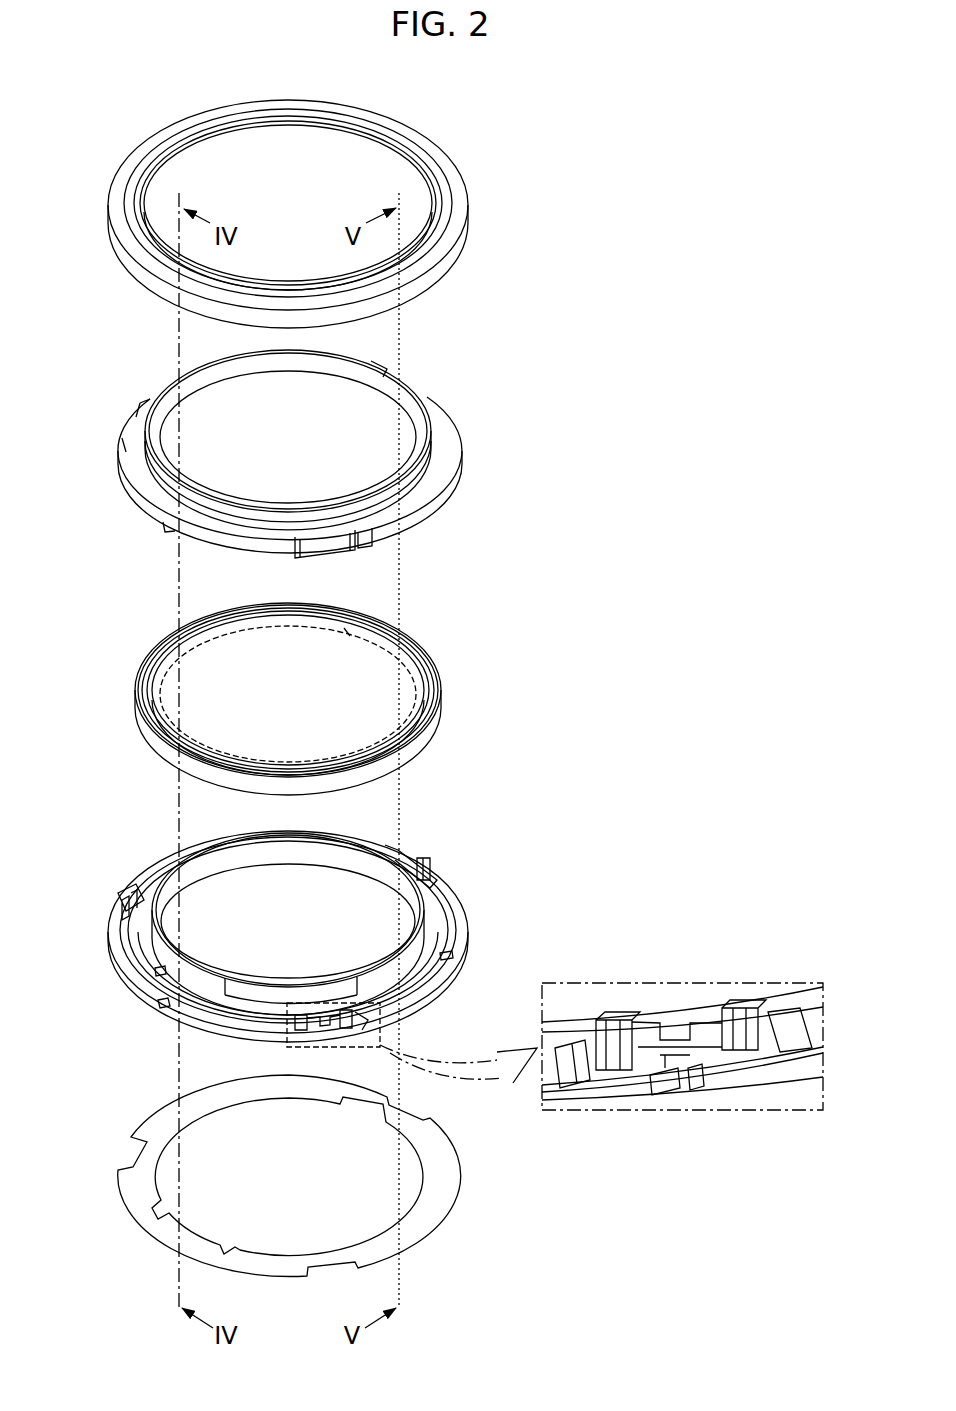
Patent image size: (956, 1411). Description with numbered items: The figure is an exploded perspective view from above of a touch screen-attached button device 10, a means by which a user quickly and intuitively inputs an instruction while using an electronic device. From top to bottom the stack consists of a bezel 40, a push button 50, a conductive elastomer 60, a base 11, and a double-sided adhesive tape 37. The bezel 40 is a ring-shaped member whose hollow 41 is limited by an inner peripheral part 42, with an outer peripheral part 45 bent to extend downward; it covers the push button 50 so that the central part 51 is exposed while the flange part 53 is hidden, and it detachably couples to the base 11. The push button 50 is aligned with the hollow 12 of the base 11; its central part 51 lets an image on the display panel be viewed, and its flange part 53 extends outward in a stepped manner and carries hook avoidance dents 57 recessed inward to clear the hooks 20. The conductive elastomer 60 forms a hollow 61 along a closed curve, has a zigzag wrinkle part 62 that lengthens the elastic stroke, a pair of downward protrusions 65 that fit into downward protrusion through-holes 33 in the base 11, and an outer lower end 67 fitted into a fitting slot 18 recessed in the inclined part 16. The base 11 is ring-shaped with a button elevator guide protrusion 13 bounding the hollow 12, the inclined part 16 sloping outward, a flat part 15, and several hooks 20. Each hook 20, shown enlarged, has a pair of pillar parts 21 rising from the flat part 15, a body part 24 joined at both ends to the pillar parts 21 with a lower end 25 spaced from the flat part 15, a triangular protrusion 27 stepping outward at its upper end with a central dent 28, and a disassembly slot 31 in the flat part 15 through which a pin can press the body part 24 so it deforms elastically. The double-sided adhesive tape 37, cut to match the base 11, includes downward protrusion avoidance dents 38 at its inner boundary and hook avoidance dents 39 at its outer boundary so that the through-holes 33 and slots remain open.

The touch screen-attached button device 10 is at (330, 194).
The bezel 40 is at (328, 194).
The hollow 41 is at (285, 203).
The inner peripheral part 42 is at (145, 170).
The outer peripheral part 45 is at (430, 280).
The push button 50 is at (312, 458).
The central part 51 is at (363, 435).
The flange part 53 is at (433, 473).
The hook avoidance dents 57 is at (407, 385).
The conductive elastomer 60 is at (293, 678).
The hollow 61 is at (278, 695).
The wrinkle part 62 is at (150, 653).
The downward protrusions 65 is at (373, 645).
The outer lower end 67 is at (433, 733).
The base 11 is at (435, 981).
The hollow 12 is at (303, 900).
The button elevator guide protrusion 13 is at (193, 853).
The flat part 15 is at (128, 973).
The inclined part 16 is at (150, 948).
The fitting slot 18 is at (440, 937).
The hooks 20 is at (433, 981).
The pillar parts 21 is at (612, 1037).
The body part 24 is at (693, 1063).
The lower end 25 is at (672, 1083).
The triangular protrusion 27 is at (708, 1033).
The dent 28 is at (677, 1050).
The disassembly slot 31 is at (687, 1090).
The downward protrusion through-holes 33 is at (165, 980).
The double-sided adhesive tape 37 is at (304, 1213).
The downward protrusion avoidance dents 38 is at (368, 1108).
The hook avoidance dents 39 is at (135, 1152).